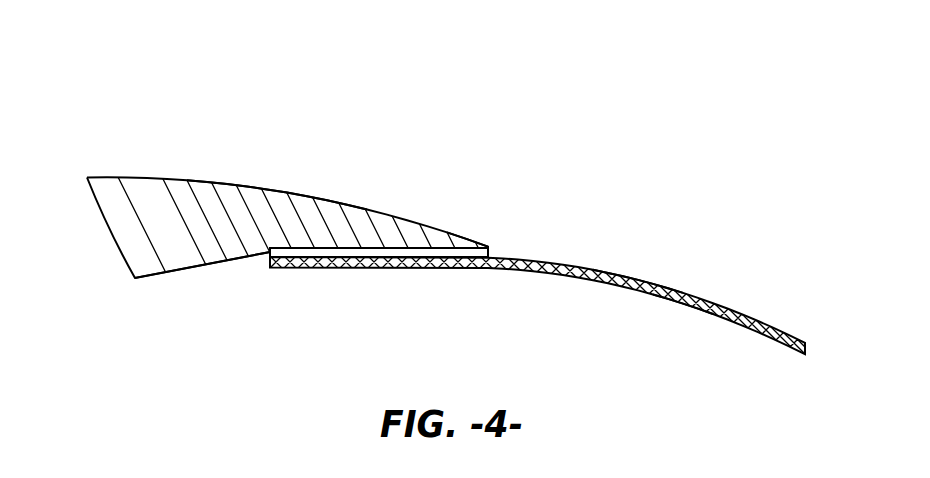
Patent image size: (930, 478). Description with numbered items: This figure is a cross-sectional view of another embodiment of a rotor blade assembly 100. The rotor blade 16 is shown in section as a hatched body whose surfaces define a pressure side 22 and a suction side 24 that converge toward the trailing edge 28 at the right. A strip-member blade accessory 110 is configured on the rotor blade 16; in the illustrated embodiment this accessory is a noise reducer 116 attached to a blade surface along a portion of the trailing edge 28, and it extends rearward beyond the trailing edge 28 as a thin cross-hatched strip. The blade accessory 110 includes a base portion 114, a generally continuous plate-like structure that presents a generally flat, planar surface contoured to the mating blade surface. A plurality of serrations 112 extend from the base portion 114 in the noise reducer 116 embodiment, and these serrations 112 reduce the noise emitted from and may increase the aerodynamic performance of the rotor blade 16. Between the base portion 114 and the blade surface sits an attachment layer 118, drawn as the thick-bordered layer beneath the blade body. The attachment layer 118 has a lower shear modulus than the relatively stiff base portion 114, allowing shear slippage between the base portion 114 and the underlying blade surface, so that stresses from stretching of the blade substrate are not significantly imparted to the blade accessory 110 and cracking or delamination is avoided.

The rotor blade assembly 100 is at (195, 129).
The rotor blade 16 is at (128, 177).
The suction side 24 is at (300, 182).
The pressure side 22 is at (193, 267).
The trailing edge 28 is at (490, 250).
The base portion 114 is at (338, 267).
The attachment layer 118 is at (407, 255).
The strip-member blade accessory 110 is at (484, 272).
The noise reducer 116 is at (643, 280).
The serrations 112 is at (688, 306).